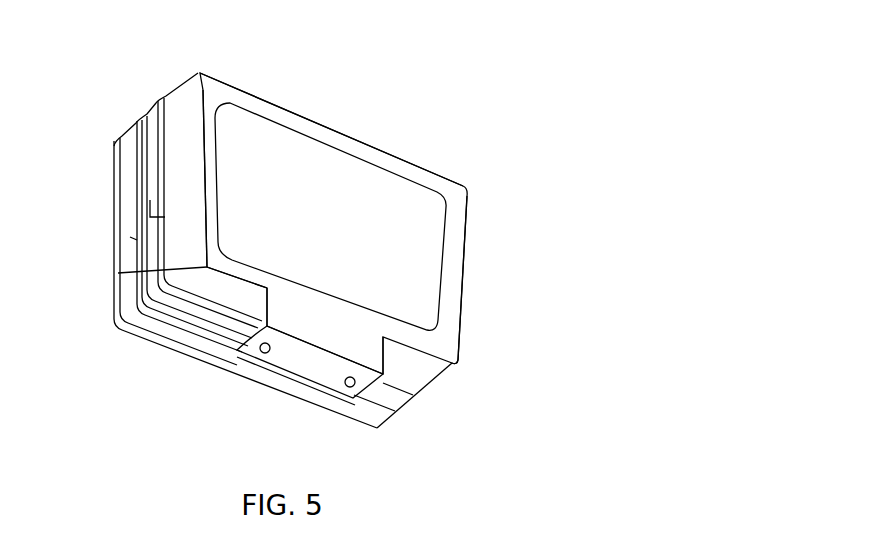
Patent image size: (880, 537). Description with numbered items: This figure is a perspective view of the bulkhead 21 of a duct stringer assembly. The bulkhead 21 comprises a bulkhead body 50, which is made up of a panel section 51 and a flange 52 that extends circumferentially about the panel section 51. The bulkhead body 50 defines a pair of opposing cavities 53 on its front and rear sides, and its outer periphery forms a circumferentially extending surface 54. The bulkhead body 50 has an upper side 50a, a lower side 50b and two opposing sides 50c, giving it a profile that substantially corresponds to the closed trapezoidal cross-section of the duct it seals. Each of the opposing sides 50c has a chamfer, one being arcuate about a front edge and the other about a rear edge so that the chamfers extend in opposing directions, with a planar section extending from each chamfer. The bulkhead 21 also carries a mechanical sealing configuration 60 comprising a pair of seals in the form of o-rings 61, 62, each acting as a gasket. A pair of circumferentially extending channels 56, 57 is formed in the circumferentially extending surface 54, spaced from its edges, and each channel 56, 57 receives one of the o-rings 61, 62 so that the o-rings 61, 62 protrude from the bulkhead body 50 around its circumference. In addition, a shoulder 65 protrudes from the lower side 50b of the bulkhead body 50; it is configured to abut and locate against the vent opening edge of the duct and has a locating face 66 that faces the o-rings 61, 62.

The bulkhead 21 is at (549, 73).
The bulkhead body 50 is at (456, 243).
The upper side 50a is at (270, 103).
The lower side 50b is at (275, 400).
The opposing sides 50c is at (182, 112).
The panel section 51 is at (343, 183).
The flange 52 is at (452, 303).
The cavities 53 is at (400, 205).
The circumferentially extending surface 54 is at (413, 372).
The channel 56 is at (195, 300).
The channel 57 is at (175, 350).
The mechanical sealing configuration 60 is at (203, 250).
The o-ring 61 is at (160, 200).
The o-ring 62 is at (126, 214).
The shoulder 65 is at (332, 382).
The locating face 66 is at (290, 380).